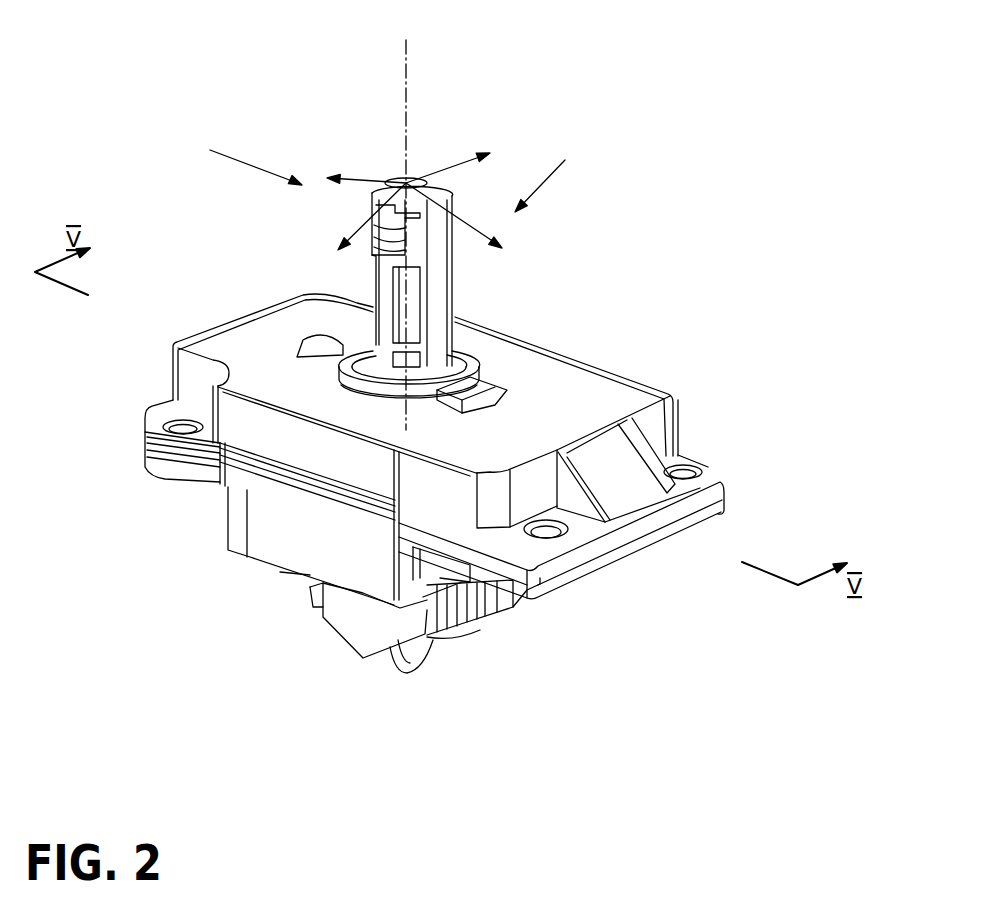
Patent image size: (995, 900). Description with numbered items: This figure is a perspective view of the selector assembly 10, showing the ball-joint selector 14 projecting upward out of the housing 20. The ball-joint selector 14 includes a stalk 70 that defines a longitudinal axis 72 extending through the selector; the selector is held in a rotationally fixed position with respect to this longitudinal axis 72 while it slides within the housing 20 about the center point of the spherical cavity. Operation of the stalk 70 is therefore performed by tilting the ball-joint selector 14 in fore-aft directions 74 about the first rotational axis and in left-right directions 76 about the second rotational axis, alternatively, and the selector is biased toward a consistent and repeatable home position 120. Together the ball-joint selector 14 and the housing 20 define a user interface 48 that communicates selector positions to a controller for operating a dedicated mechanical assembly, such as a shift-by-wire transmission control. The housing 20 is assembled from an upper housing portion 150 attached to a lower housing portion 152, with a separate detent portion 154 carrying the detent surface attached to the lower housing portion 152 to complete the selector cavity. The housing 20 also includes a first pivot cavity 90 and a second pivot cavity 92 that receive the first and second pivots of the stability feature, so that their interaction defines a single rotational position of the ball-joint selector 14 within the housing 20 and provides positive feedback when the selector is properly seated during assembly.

The selector assembly 10 is at (613, 300).
The ball-joint selector 14 is at (372, 285).
The housing 20 is at (668, 385).
The user interface 48 is at (556, 174).
The stalk 70 is at (435, 298).
The longitudinal axis 72 is at (408, 103).
The fore-aft directions 74 is at (363, 172).
The left-right directions 76 is at (448, 158).
The first pivot cavity 90 is at (502, 347).
The second pivot cavity 92 is at (308, 333).
The home position 120 is at (230, 161).
The upper housing portion 150 is at (600, 387).
The lower housing portion 152 is at (243, 517).
The detent portion 154 is at (357, 617).